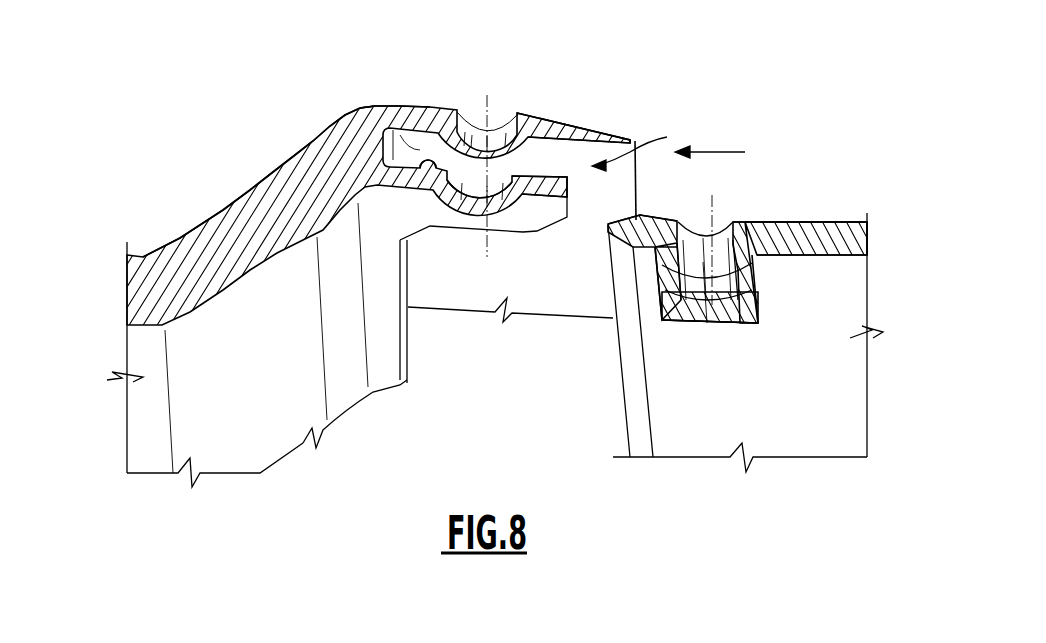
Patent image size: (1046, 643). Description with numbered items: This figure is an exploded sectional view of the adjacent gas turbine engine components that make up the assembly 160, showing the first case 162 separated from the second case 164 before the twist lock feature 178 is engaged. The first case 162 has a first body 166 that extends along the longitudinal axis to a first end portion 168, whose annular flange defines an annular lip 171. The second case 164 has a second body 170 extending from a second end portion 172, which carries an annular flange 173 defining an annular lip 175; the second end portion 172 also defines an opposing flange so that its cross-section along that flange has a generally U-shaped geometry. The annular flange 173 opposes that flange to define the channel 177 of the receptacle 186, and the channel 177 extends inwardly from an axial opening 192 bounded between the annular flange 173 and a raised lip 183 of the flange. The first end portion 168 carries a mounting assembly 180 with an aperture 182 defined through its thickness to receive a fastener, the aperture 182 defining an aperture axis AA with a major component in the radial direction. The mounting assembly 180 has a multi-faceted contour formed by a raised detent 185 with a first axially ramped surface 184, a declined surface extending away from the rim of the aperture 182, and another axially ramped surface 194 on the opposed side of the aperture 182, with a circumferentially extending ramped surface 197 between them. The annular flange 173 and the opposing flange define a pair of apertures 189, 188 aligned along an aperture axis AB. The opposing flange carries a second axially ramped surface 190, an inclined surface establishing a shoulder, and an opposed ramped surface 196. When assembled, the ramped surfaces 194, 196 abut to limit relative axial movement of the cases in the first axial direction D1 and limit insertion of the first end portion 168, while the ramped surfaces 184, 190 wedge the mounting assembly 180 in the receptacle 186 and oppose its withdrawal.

The assembly 160 is at (225, 92).
The first case 162 is at (782, 220).
The second case 164 is at (213, 213).
The first body 166 is at (859, 222).
The first end portion 168 is at (643, 222).
The second body 170 is at (145, 256).
The annular lip 171 is at (627, 406).
The second end portion 172 is at (333, 137).
The annular flange 173 is at (527, 112).
The annular lip 175 is at (635, 140).
The channel 177 is at (393, 130).
The twist lock feature 178 is at (760, 88).
The mounting assembly 180 is at (755, 207).
The aperture 182 is at (703, 222).
The raised lip 183 is at (567, 183).
The first axially ramp surface 184 is at (737, 268).
The detent 185 is at (731, 300).
The receptacle 186 is at (580, 114).
The aperture 188 is at (468, 205).
The aperture 189 is at (468, 102).
The second axially ramped surface 190 is at (636, 176).
The axial opening 192 is at (649, 144).
The axially ramped surface 194 is at (668, 265).
The axially ramp surface 196 is at (420, 180).
The circumferentially extending ramped surface 197 is at (702, 288).
The aperture axis AB is at (490, 103).
The aperture axis AA is at (713, 226).
The first axial direction D1 is at (723, 153).